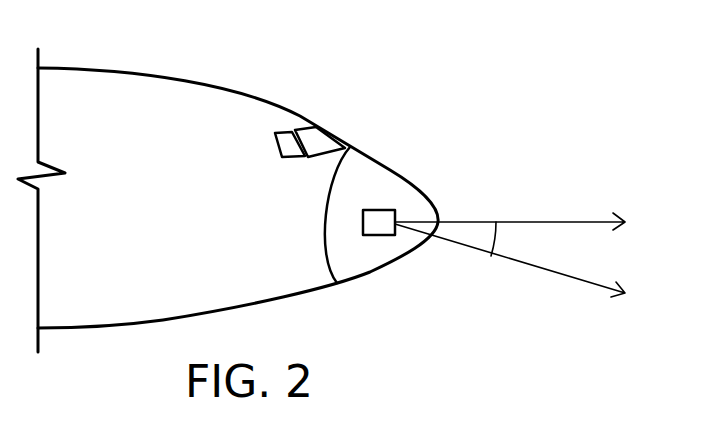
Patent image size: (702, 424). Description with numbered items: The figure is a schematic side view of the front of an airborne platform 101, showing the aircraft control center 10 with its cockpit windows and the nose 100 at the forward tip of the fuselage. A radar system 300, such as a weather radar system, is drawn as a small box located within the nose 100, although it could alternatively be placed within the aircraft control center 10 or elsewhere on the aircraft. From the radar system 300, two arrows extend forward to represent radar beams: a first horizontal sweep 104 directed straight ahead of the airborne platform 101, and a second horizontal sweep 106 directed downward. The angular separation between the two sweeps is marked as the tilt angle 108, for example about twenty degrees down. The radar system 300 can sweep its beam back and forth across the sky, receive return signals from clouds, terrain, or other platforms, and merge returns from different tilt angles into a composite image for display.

The airborne platform 101 is at (422, 53).
The aircraft control center 10 is at (277, 120).
The nose 100 is at (355, 172).
The radar system 300 is at (376, 224).
The first horizontal sweep 104 is at (593, 218).
The second horizontal sweep 106 is at (553, 273).
The tilt angle 108 is at (505, 220).